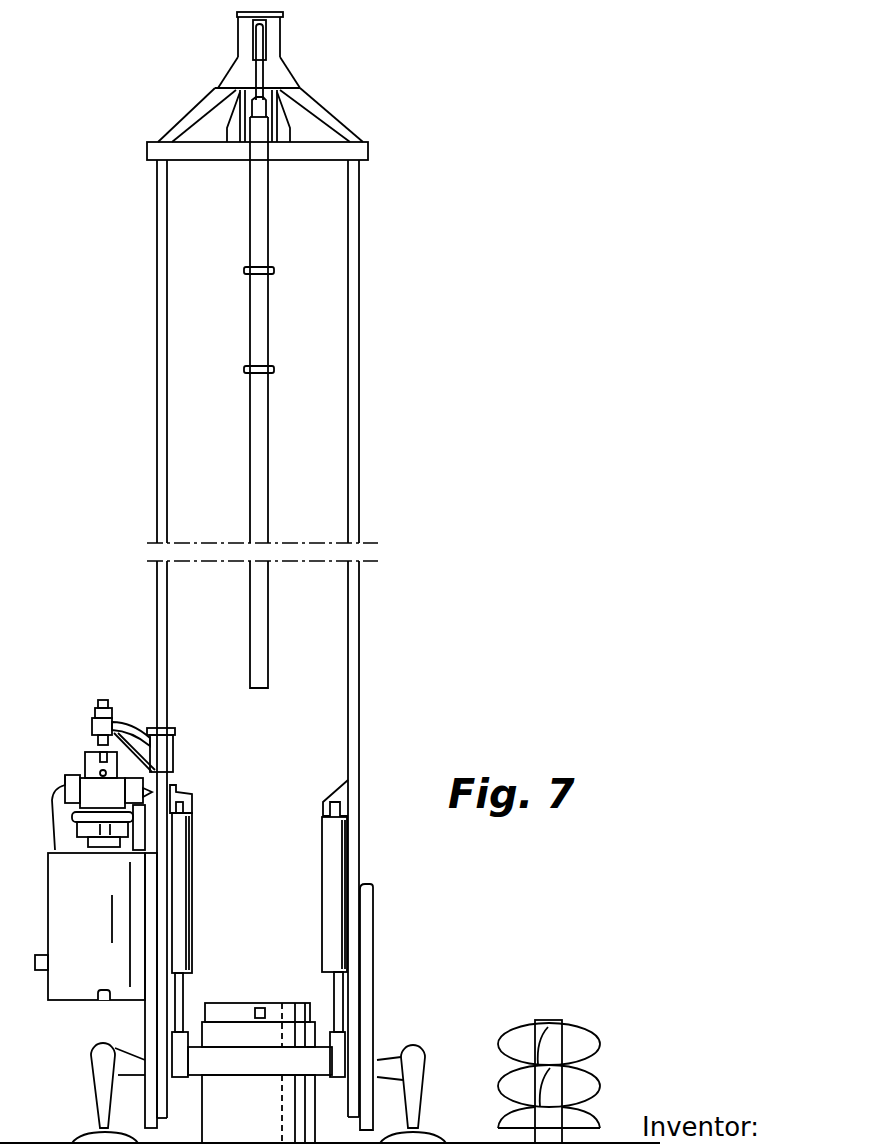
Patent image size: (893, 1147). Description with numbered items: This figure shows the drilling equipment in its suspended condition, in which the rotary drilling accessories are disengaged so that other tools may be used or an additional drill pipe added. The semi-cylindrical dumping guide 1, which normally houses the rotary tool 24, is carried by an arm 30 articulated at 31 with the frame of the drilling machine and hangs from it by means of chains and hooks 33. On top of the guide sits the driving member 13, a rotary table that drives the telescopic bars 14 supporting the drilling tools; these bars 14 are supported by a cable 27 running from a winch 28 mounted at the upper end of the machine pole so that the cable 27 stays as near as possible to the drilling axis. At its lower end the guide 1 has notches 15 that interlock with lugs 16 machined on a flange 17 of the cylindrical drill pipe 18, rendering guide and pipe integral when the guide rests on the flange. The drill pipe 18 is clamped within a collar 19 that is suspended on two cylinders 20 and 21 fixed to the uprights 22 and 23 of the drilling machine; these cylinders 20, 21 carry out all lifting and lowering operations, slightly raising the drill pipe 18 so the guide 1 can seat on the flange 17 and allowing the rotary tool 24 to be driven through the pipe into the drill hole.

The dumping guide 1 is at (100, 902).
The driving member 13 is at (88, 825).
The bars 14 is at (258, 635).
The notches 15 is at (104, 1001).
The lugs 16 is at (260, 1008).
The flange 17 is at (297, 1008).
The drill pipe 18 is at (258, 1109).
The collar 19 is at (260, 1061).
The cylinder 20 is at (182, 878).
The cylinder 21 is at (327, 850).
The upright 22 is at (165, 637).
The upright 23 is at (358, 633).
The rotary tool 24 is at (585, 1035).
The cable 27 is at (263, 78).
The winch 28 is at (265, 38).
The arm 30 is at (138, 723).
The articulation 31 is at (173, 732).
The chains and hooks 33 is at (85, 758).